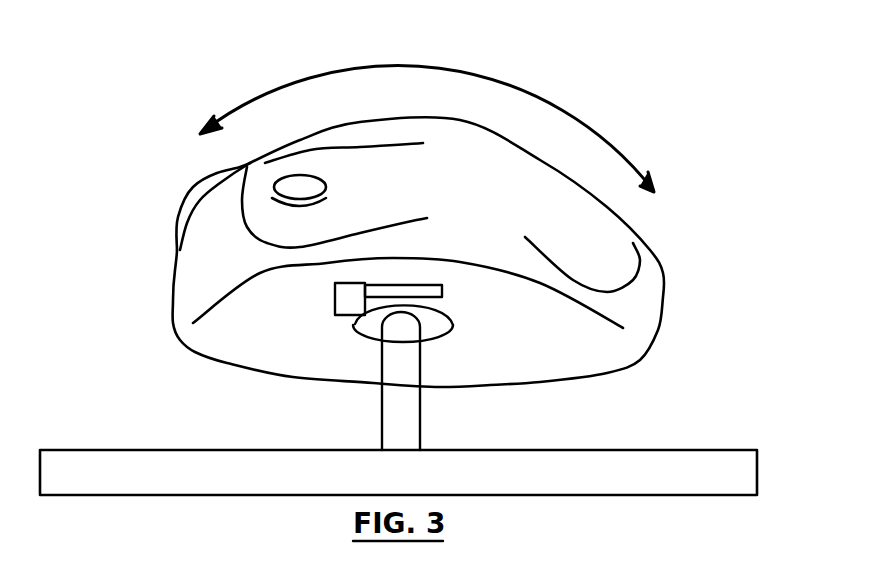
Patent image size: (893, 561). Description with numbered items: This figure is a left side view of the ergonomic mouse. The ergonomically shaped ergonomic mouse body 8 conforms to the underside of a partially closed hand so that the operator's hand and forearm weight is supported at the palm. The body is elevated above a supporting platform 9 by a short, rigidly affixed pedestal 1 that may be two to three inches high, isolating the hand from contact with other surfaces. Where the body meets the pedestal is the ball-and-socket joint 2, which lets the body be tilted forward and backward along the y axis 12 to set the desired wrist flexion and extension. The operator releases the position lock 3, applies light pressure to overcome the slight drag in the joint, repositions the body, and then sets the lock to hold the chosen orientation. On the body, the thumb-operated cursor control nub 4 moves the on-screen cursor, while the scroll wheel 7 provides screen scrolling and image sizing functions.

The pedestal 1 is at (382, 408).
The ball-and-socket joint 2 is at (423, 332).
The position lock 3 is at (333, 312).
The cursor control nub 4 is at (277, 178).
The scroll wheel 7 is at (185, 203).
The ergonomic mouse body 8 is at (663, 273).
The supporting platform 9 is at (757, 470).
The y axis 12 is at (427, 129).